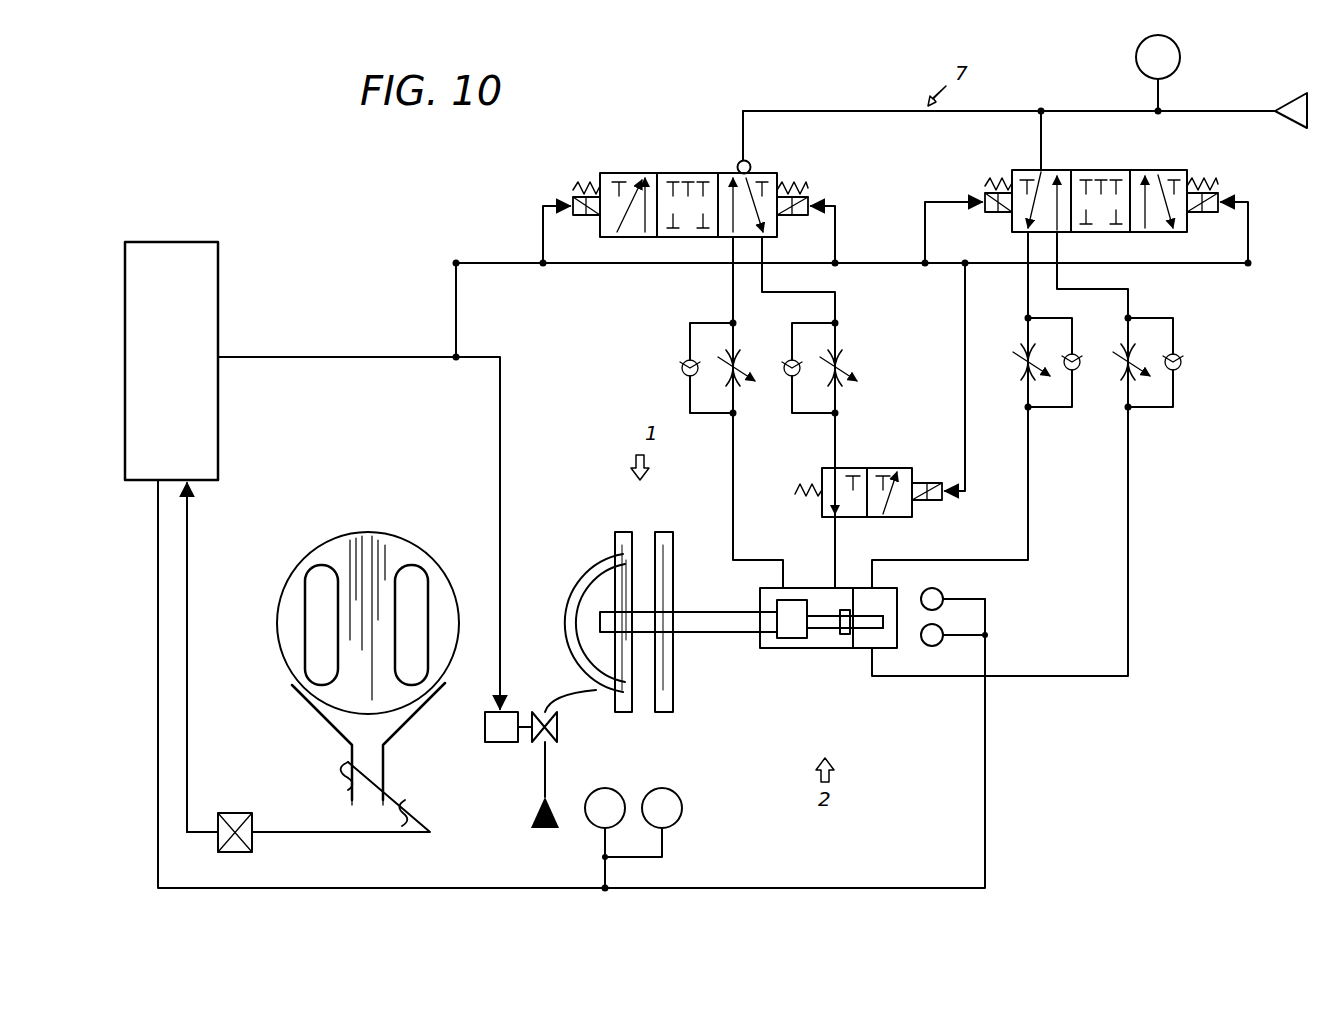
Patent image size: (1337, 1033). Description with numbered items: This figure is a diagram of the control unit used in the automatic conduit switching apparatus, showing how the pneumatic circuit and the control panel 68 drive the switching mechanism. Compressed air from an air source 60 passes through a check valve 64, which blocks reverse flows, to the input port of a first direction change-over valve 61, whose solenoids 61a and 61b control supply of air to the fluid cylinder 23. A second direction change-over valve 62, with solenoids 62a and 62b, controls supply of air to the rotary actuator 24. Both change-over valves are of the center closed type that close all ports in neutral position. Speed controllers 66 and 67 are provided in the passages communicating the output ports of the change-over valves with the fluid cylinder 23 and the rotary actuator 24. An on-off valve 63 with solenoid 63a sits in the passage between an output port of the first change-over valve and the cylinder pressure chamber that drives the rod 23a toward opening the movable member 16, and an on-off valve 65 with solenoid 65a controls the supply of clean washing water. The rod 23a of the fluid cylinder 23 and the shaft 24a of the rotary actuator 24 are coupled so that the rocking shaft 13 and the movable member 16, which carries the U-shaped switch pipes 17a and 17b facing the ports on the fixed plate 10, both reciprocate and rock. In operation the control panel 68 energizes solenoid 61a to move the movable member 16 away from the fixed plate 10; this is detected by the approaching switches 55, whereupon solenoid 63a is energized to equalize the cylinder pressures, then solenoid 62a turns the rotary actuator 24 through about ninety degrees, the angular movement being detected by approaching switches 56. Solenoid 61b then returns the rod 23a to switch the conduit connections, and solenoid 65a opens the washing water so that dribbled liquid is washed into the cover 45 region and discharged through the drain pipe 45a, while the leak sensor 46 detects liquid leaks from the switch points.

The fixed plate 10 is at (664, 532).
The rocking shaft 13 is at (724, 635).
The movable member 16 is at (364, 536).
The U-shaped switch pipe 17a is at (314, 583).
The U-shaped switch pipe 17b is at (416, 580).
The fluid cylinder 23 is at (806, 585).
The rod 23a is at (838, 634).
The rotary actuator 24 is at (864, 654).
The shaft 24a is at (878, 612).
The cover 45 is at (300, 692).
The drain pipe 45a is at (352, 792).
The leak sensor 46 is at (350, 758).
The approaching switches 55 is at (660, 790).
The approaching switches 56 is at (940, 630).
The air source 60 is at (1283, 98).
The first direction change-over valve 61 is at (675, 163).
The solenoid 61a is at (808, 198).
The solenoid 61b is at (573, 198).
The second direction change-over valve 62 is at (1132, 158).
The solenoid 62a is at (1218, 194).
The solenoid 62b is at (985, 194).
The on-off valve 63 is at (870, 464).
The solenoid 63a is at (930, 483).
The check valve 64 is at (752, 165).
The on-off valve 65 is at (562, 728).
The solenoid 65a is at (500, 742).
The speed controller 66 is at (680, 374).
The speed controller 67 is at (1190, 378).
The control panel 68 is at (171, 361).